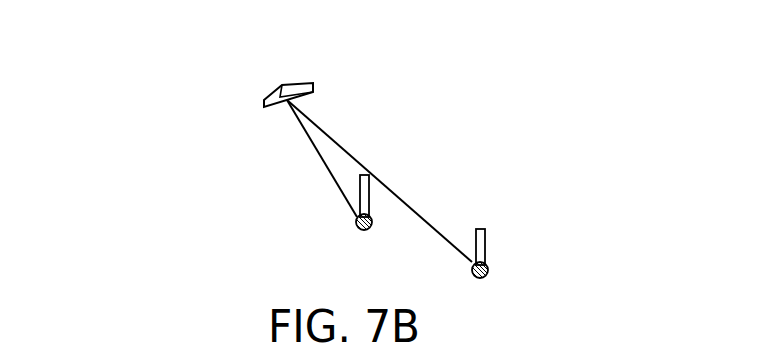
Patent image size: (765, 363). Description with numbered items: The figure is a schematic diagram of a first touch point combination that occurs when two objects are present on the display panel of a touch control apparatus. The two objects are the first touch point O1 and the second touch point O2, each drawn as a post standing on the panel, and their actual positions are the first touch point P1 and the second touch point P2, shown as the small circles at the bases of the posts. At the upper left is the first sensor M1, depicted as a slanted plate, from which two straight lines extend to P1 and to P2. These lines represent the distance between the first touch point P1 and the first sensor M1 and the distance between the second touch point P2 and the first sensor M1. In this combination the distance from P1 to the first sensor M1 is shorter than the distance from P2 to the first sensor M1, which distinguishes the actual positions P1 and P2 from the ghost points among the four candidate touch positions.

The first sensor M1 is at (281, 86).
The first touch point O1 is at (368, 173).
The second touch point O2 is at (481, 228).
The first touch point P1 is at (353, 231).
The second touch point P2 is at (497, 277).